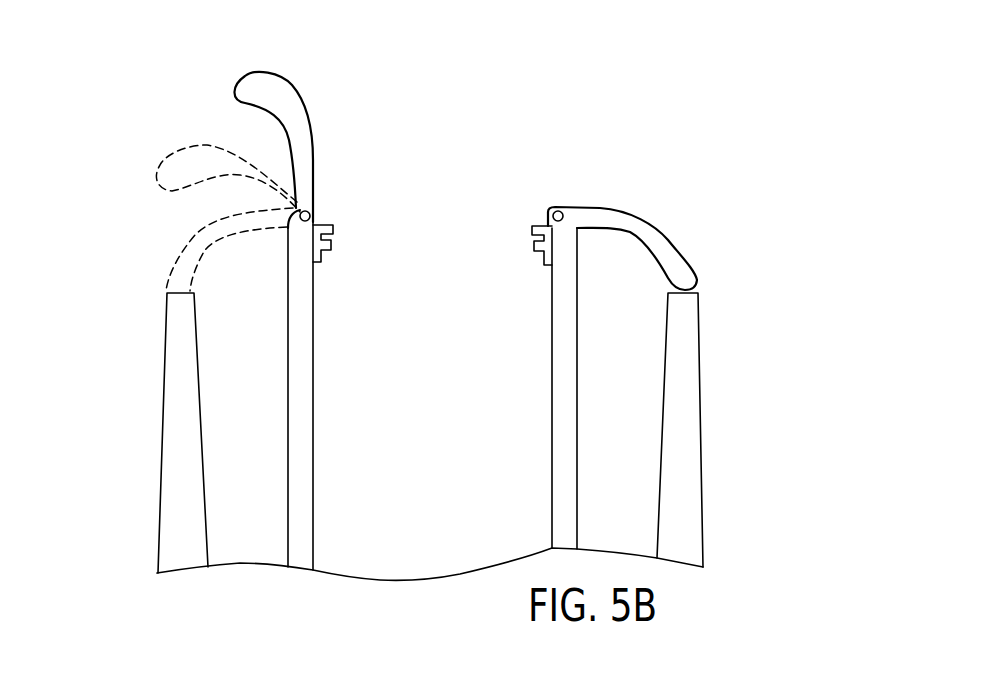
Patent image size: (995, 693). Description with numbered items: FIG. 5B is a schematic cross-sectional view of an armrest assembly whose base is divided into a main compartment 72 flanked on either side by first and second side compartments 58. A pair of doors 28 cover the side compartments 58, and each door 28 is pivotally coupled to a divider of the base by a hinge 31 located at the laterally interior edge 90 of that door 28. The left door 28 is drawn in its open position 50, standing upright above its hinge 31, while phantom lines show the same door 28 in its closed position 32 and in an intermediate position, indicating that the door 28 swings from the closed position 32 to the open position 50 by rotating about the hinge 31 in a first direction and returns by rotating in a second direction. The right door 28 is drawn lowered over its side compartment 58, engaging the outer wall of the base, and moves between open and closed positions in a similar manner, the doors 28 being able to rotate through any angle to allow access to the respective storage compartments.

The door 28 is at (273, 80).
The hinge 31 is at (287, 220).
The closed position 32 is at (166, 230).
The open position 50 is at (325, 130).
The side compartment 58 is at (255, 465).
The main compartment 72 is at (443, 467).
The laterally interior edge 90 is at (316, 211).